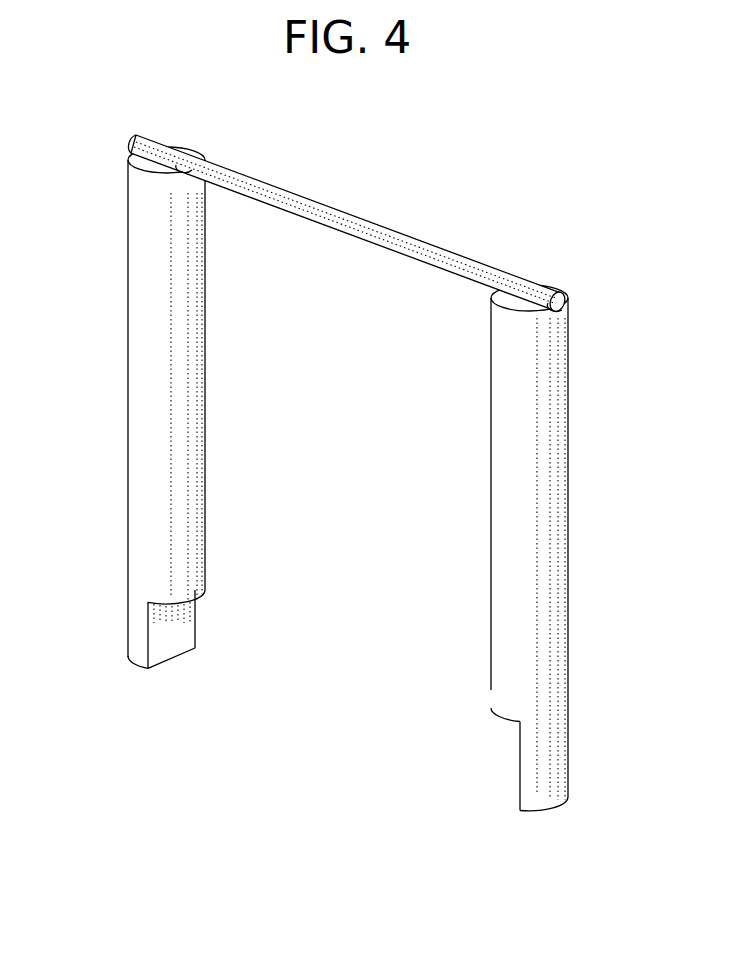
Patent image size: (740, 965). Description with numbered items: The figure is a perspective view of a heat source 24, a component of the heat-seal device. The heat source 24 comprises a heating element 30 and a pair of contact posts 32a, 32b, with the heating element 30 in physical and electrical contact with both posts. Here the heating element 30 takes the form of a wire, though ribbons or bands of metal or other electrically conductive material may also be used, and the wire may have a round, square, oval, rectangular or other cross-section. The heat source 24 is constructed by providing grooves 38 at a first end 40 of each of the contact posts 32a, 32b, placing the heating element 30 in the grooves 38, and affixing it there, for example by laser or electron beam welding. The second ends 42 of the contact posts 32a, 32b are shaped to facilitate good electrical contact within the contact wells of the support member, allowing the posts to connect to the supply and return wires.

The heat source 24 is at (350, 473).
The heating element 30 is at (373, 232).
The contact post 32a is at (563, 552).
The contact post 32b is at (135, 388).
The grooves 38 is at (185, 175).
The first end 40 is at (128, 190).
The second ends 42 is at (185, 628).